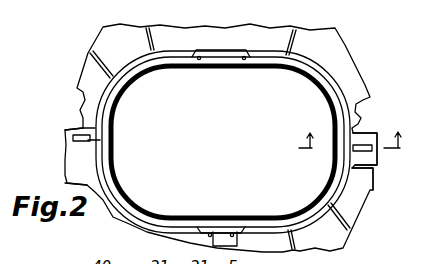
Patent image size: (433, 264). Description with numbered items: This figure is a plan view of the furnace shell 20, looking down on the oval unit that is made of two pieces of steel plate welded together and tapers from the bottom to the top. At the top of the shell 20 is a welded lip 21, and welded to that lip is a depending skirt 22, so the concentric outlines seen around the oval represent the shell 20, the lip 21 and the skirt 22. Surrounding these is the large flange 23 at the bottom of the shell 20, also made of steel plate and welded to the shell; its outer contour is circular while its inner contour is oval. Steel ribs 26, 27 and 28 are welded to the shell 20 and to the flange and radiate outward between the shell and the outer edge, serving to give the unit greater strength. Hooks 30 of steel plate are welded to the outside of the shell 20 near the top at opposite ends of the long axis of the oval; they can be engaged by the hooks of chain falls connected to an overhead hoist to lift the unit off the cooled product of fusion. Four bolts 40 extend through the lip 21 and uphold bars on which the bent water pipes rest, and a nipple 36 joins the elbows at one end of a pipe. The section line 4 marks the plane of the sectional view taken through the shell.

The section line 4- 4 is at (342, 150).
The furnace shell 20 is at (330, 184).
The lip 21 is at (222, 58).
The depending skirt 22 is at (332, 85).
The flange 23 is at (353, 203).
The steel rib 26 is at (93, 63).
The steel rib 27 is at (146, 43).
The steel rib 28 is at (68, 137).
The hook 30 is at (83, 130).
The nipple 36 is at (234, 236).
The bolt 40 is at (247, 56).